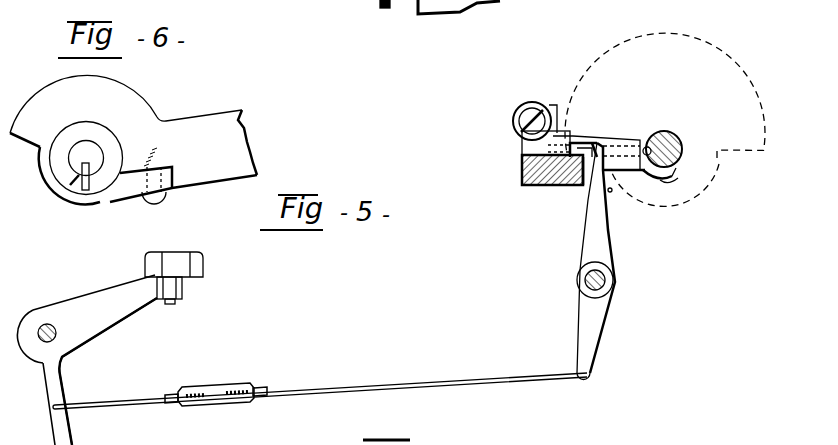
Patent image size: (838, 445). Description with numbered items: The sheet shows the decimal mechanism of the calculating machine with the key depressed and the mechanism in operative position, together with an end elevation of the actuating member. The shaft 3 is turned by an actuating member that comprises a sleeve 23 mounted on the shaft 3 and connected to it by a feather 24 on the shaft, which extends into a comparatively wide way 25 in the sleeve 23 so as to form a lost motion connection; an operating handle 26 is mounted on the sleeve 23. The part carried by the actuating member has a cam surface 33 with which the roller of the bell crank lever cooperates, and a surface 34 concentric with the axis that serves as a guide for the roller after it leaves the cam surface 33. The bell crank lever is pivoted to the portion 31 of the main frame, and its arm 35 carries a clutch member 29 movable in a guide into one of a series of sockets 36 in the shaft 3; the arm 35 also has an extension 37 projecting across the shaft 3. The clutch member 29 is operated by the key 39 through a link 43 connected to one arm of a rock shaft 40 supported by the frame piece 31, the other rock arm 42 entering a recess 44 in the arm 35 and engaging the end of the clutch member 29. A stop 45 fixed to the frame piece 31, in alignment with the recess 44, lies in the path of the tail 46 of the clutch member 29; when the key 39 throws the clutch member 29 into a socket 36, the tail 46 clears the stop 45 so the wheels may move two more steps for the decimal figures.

In FIG. 6, the shaft 3 is at (80, 157).
In FIG. 5, the shaft 3 is at (678, 138).
In FIG. 6, the sleeve 23 is at (62, 172).
In FIG. 6, the feather 24 is at (88, 184).
In FIG. 6, the way 25 is at (77, 196).
In FIG. 6, the operating handle 26 is at (247, 115).
In FIG. 5, the clutch member 29 is at (651, 146).
In FIG. 5, the portion of the main frame 31 is at (522, 163).
In FIG. 5, the cam surface 33 is at (556, 105).
In FIG. 5, the concentric surface 34 is at (628, 36).
In FIG. 5, the arm of the bell crank lever 35 is at (588, 137).
In FIG. 5, the sockets 36 is at (650, 172).
In FIG. 5, the extension 37 is at (670, 178).
In FIG. 5, the key 39 is at (183, 265).
In FIG. 5, the rock shaft 40 is at (613, 280).
In FIG. 5, the rock arm 42 is at (590, 233).
In FIG. 5, the link 43 is at (587, 333).
In FIG. 5, the recess 44 is at (577, 143).
In FIG. 5, the stop 45 is at (578, 182).
In FIG. 5, the tail 46 is at (603, 143).